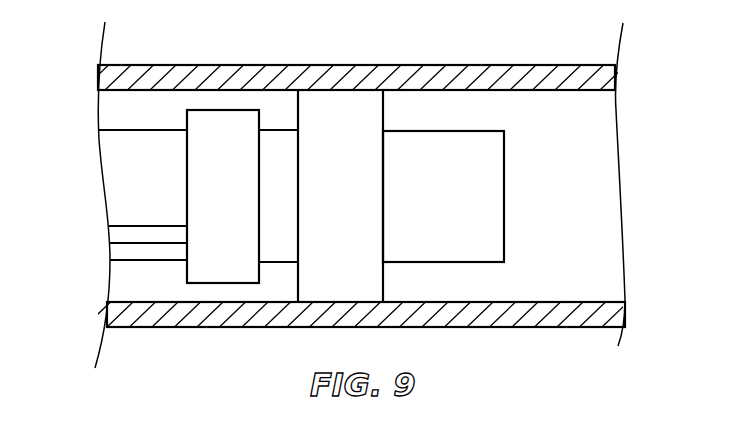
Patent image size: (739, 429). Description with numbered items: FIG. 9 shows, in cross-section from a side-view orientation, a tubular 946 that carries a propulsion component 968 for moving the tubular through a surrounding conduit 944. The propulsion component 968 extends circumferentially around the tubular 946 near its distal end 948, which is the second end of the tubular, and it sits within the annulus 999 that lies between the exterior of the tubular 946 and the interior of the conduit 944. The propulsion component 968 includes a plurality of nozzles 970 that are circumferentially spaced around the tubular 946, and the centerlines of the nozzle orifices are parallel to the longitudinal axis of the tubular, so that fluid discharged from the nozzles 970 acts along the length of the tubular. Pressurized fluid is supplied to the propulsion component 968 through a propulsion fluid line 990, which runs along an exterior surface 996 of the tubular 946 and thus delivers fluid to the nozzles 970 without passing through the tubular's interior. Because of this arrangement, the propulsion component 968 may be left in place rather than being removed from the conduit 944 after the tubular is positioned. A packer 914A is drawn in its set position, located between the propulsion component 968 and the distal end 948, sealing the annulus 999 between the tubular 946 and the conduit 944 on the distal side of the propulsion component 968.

The conduit 944 is at (160, 77).
The propulsion component 968 is at (224, 125).
The packer 914A is at (342, 102).
The tubular 946 is at (422, 131).
The distal end 948 is at (483, 182).
The exterior surface 996 is at (470, 235).
The nozzles 970 is at (187, 118).
The propulsion fluid line 990 is at (112, 237).
The annulus 999 is at (173, 295).